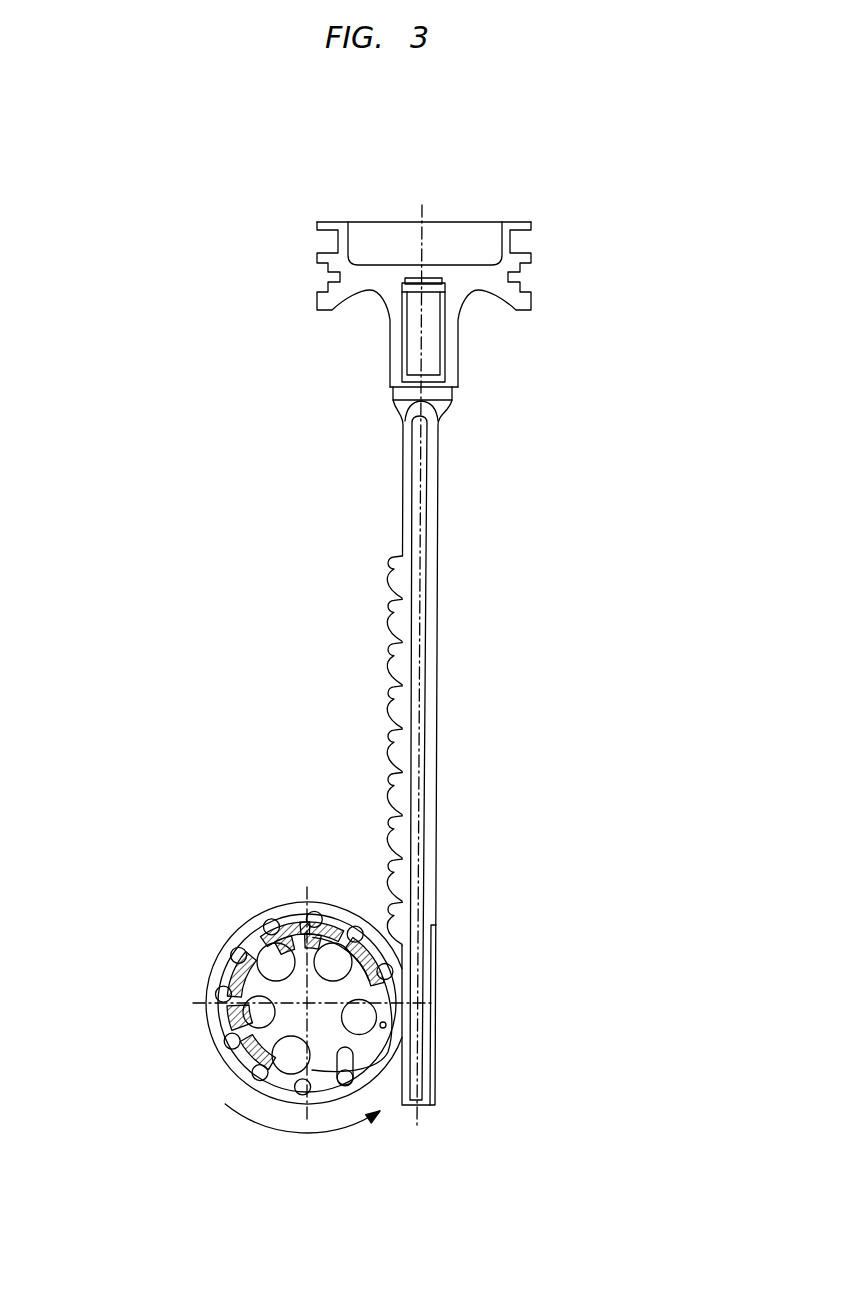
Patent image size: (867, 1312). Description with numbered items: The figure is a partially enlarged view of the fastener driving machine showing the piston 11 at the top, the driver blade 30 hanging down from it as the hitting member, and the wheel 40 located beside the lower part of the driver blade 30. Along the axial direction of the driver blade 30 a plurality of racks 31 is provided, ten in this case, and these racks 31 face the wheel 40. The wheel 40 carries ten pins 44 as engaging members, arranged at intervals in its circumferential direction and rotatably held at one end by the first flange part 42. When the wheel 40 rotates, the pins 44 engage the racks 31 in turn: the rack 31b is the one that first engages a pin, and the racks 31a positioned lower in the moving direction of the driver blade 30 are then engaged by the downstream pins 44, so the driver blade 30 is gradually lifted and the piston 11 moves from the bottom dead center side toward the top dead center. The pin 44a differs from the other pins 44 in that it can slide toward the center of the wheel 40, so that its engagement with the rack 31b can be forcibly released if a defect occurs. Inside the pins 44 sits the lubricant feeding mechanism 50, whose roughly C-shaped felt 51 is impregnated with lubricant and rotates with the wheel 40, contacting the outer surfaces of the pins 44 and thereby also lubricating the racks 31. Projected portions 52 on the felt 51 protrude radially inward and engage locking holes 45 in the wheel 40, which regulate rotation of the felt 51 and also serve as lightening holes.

The piston 11 is at (528, 265).
The driver blade 30 is at (438, 510).
The racks 31 is at (276, 707).
The racks 31a is at (388, 607).
The rack 31b is at (388, 563).
The wheel 40 is at (372, 991).
The first flange part 42 is at (208, 990).
The pins 44 is at (407, 1040).
The pin 44a is at (378, 1065).
The locking holes 45 is at (293, 922).
The lubricant feeding mechanism 50 is at (434, 1003).
The felt 51 is at (387, 983).
The projected portions 52 is at (230, 1010).